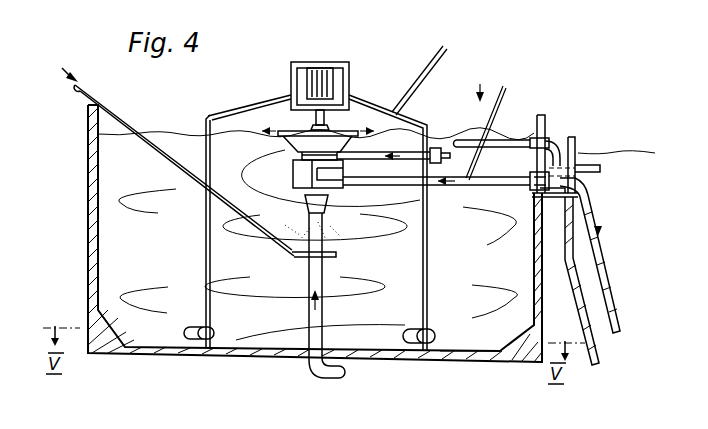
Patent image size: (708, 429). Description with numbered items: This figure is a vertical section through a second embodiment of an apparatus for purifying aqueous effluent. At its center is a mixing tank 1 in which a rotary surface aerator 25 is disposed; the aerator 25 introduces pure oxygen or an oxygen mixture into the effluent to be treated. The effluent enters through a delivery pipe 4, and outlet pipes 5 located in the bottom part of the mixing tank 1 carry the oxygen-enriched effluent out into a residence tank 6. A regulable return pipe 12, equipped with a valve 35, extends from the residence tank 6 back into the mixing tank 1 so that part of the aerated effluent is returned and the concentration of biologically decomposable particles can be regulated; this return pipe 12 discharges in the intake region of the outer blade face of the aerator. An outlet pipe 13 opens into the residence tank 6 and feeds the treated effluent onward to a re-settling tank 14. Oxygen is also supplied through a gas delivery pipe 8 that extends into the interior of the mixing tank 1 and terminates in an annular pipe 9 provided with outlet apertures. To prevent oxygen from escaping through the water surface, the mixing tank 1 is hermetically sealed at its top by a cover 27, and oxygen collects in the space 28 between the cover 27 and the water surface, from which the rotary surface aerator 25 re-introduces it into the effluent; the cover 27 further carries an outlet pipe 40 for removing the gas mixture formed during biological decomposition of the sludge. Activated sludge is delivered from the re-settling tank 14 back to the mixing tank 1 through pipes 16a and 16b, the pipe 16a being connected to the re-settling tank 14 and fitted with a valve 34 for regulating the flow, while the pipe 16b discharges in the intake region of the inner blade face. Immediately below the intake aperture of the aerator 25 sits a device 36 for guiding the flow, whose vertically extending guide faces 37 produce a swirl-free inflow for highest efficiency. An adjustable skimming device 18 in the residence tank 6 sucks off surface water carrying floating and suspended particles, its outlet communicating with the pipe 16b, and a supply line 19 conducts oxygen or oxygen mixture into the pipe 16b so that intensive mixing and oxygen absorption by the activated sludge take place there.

The mixing tank 1 is at (236, 350).
The delivery pipe 4 is at (306, 385).
The outlet pipes 5 is at (410, 344).
The residence tank 6 is at (467, 351).
The gas delivery pipe 8 is at (118, 117).
The annular pipe 9 is at (336, 255).
The return pipe 12 is at (402, 152).
The outlet pipe 13 is at (590, 167).
The re-settling tank 14 is at (590, 304).
The pipe 16a is at (606, 290).
The pipe 16b is at (478, 176).
The skimming device 18 is at (547, 145).
The supply line 19 is at (505, 88).
The rotary surface aerator 25 is at (337, 145).
The cover 27 is at (213, 117).
The space 28 is at (251, 110).
The valve 34 is at (590, 194).
The valve 35 is at (432, 149).
The device for guiding the flow 36 is at (344, 190).
The guide faces 37 is at (302, 175).
The outlet pipe 40 is at (447, 52).